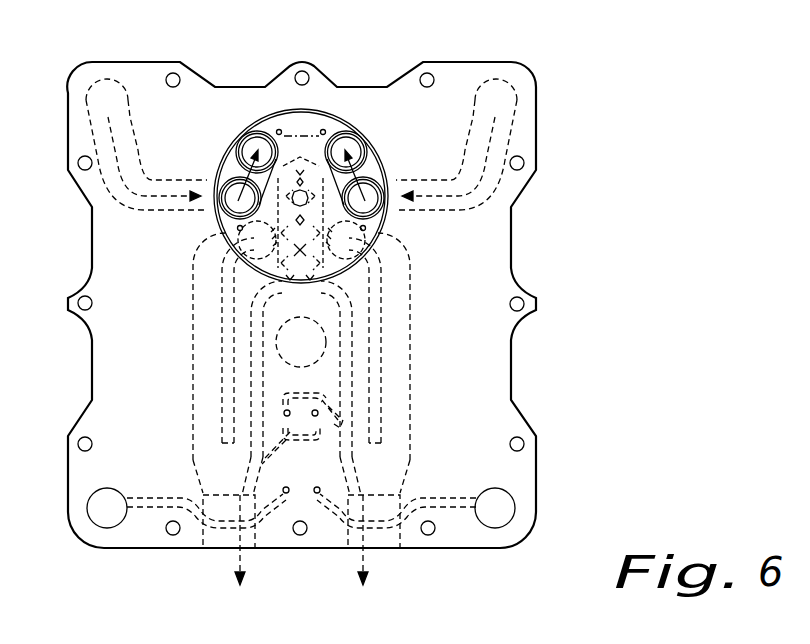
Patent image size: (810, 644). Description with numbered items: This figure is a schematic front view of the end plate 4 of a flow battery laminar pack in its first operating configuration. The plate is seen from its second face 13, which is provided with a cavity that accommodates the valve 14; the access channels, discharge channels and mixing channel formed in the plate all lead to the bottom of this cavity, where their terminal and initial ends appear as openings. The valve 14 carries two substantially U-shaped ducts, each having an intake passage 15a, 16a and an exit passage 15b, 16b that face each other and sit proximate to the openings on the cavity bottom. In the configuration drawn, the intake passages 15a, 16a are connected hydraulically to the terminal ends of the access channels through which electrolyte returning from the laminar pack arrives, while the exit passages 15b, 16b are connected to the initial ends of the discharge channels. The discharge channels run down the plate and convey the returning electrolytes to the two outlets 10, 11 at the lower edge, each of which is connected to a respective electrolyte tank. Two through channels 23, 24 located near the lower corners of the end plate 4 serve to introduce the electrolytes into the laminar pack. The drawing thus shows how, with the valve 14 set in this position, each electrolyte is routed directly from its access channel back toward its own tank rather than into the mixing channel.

The end plate 4 is at (350, 318).
The outlet 10 is at (224, 543).
The outlet 11 is at (375, 543).
The second face 13 is at (477, 360).
The valve 14 is at (305, 125).
The intake passage 15a is at (232, 200).
The exit passage 15b is at (256, 148).
The intake passage 16a is at (367, 200).
The exit passage 16b is at (352, 147).
The through channel 23 is at (106, 517).
The through channel 24 is at (495, 513).